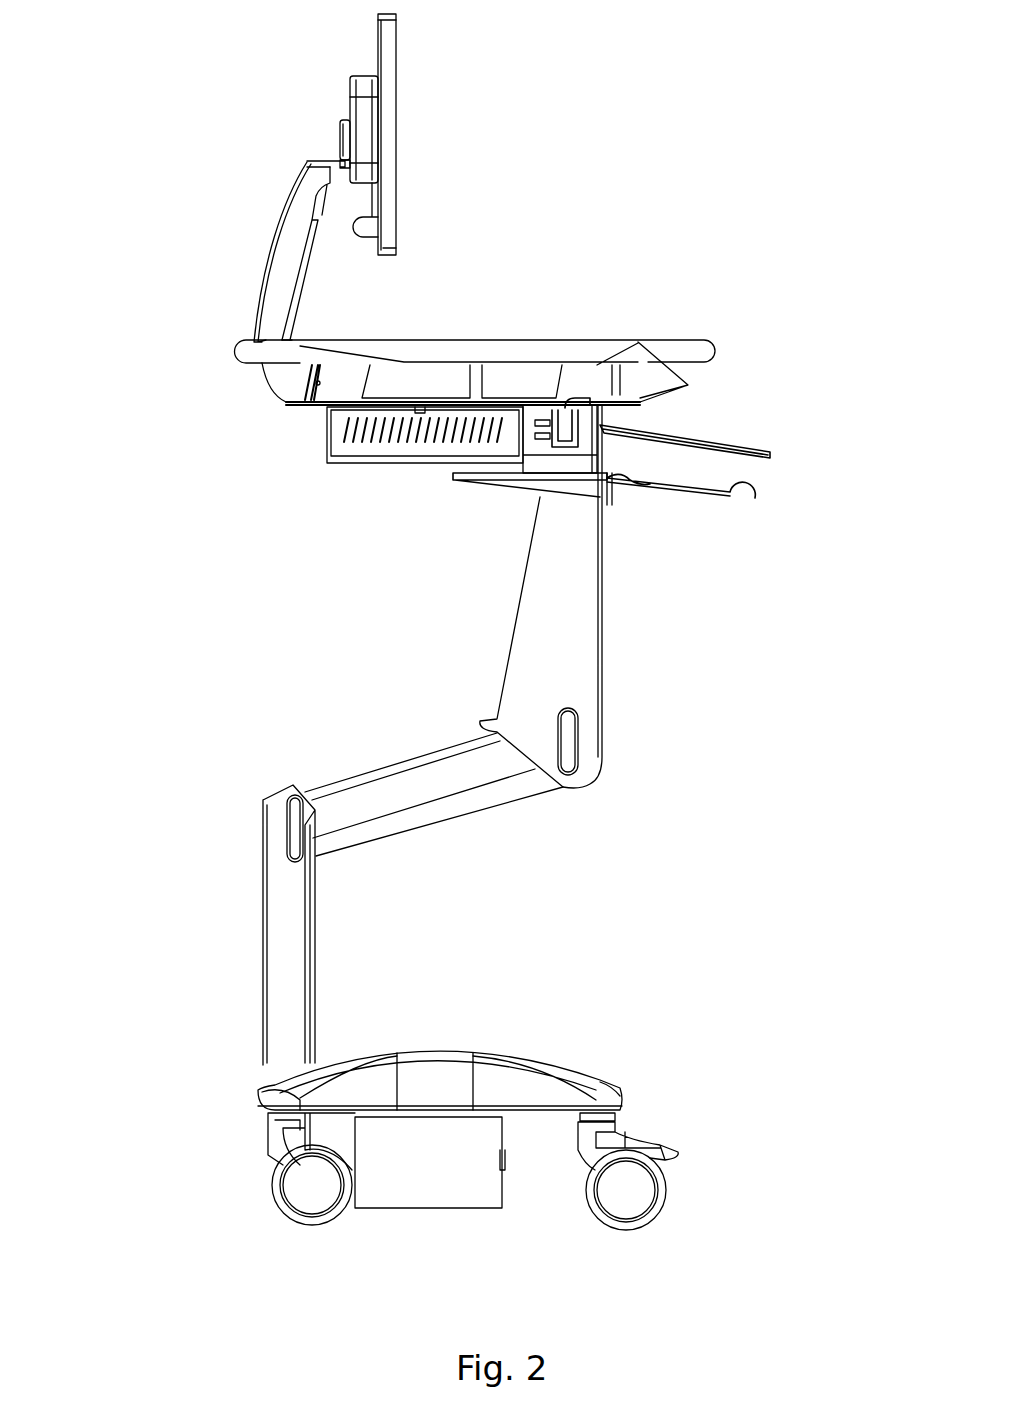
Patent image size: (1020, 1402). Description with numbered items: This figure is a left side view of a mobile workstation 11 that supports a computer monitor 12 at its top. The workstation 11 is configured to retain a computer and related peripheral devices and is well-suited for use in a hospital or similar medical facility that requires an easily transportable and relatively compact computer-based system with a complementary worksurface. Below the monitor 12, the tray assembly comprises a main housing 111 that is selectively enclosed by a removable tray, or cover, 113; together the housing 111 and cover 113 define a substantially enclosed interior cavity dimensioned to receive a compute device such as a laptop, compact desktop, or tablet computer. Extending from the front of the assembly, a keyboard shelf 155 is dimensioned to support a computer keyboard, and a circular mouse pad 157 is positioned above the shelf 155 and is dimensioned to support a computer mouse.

The mobile workstation 11 is at (130, 1186).
The computer monitor 12 is at (394, 151).
The removable tray 113 is at (565, 343).
The main housing 111 is at (330, 399).
The circular mouse pad 157 is at (757, 453).
The keyboard shelf 155 is at (674, 489).